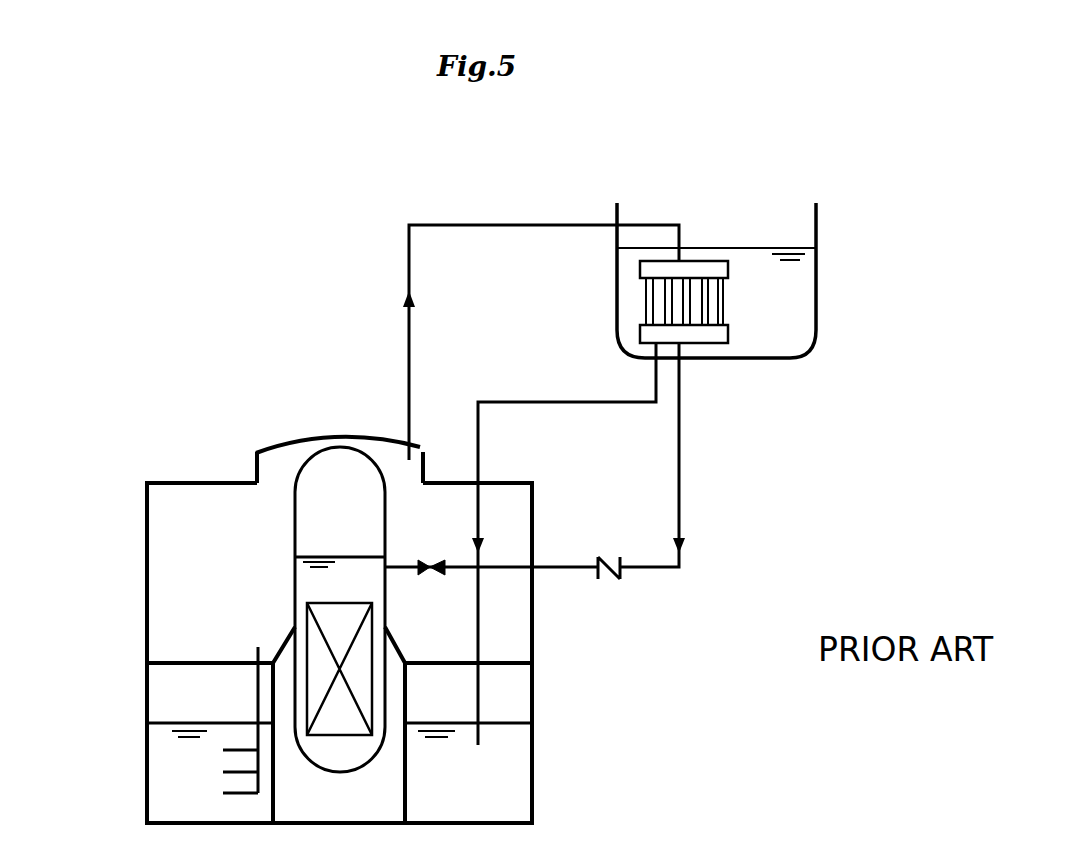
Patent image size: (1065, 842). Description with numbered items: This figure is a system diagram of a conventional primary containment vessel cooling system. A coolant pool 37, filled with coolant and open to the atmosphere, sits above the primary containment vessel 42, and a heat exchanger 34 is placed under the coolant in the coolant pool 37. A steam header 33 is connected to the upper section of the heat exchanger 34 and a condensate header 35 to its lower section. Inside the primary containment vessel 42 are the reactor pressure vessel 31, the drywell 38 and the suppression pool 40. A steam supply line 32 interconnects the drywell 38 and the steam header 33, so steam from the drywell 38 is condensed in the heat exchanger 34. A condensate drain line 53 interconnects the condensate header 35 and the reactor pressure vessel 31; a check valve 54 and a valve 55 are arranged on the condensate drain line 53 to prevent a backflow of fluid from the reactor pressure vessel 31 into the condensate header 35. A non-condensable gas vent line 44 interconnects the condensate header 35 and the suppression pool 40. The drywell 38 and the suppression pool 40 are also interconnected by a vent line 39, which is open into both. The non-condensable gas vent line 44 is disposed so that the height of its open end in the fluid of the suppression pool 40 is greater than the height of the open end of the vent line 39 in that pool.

The reactor pressure vessel 31 is at (300, 480).
The steam supply line 32 is at (527, 222).
The steam header 33 is at (710, 273).
The heat exchanger 34 is at (722, 306).
The condensate header 35 is at (715, 335).
The coolant pool 37 is at (799, 270).
The drywell 38 is at (195, 521).
The vent line 39 is at (258, 712).
The suppression pool 40 is at (160, 756).
The primary containment vessel 42 is at (147, 581).
The non-condensable gas vent line 44 is at (490, 400).
The condensate drain line 53 is at (682, 520).
The check valve 54 is at (437, 573).
The valve 55 is at (608, 580).